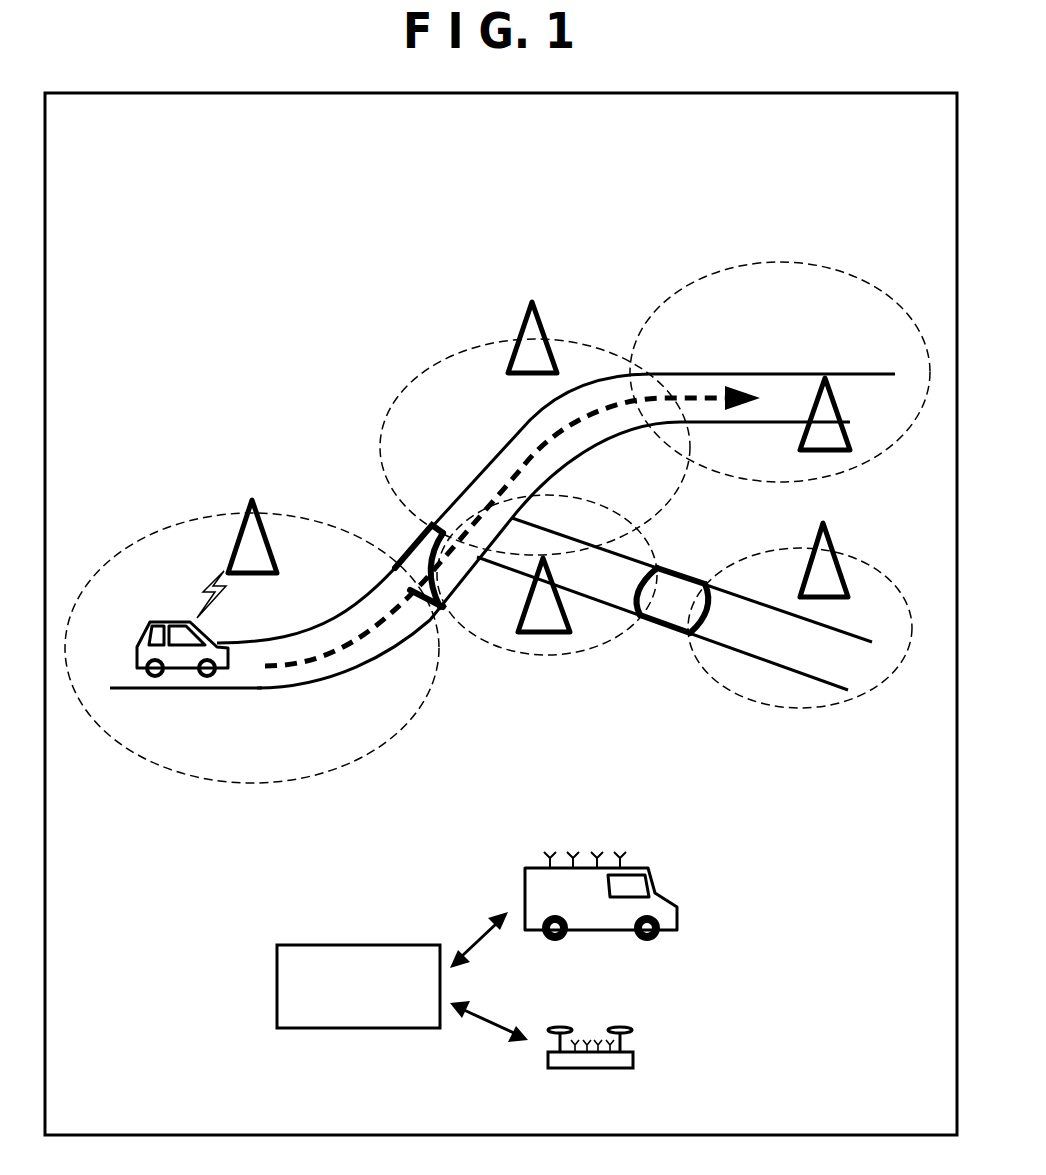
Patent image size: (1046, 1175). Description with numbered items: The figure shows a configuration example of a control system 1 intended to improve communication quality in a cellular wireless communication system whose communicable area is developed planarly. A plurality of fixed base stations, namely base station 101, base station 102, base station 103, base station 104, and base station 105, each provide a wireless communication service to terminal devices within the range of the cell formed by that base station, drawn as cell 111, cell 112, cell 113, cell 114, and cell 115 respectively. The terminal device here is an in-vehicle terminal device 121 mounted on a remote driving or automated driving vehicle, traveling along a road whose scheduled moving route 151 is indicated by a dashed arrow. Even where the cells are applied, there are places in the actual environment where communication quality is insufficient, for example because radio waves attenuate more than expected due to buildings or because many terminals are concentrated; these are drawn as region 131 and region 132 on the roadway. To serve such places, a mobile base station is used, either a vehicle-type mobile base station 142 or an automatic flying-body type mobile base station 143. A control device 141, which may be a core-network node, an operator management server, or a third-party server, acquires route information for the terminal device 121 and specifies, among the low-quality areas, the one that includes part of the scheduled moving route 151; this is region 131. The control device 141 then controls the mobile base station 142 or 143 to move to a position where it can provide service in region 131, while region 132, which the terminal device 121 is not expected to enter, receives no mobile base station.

The control system 1 is at (170, 197).
The base station 101 is at (240, 540).
The base station 102 is at (520, 330).
The base station 103 is at (810, 405).
The base station 104 is at (543, 633).
The base station 105 is at (830, 538).
The cell 111 is at (250, 783).
The cell 112 is at (397, 398).
The cell 113 is at (641, 330).
The cell 114 is at (593, 648).
The cell 115 is at (800, 708).
The in-vehicle terminal device 121 is at (228, 660).
The region 131 is at (413, 547).
The region 132 is at (657, 632).
The control device 141 is at (355, 1028).
The vehicle-type mobile base station 142 is at (678, 907).
The automatic flying-body type mobile base station 143 is at (633, 1057).
The scheduled moving route 151 is at (352, 640).